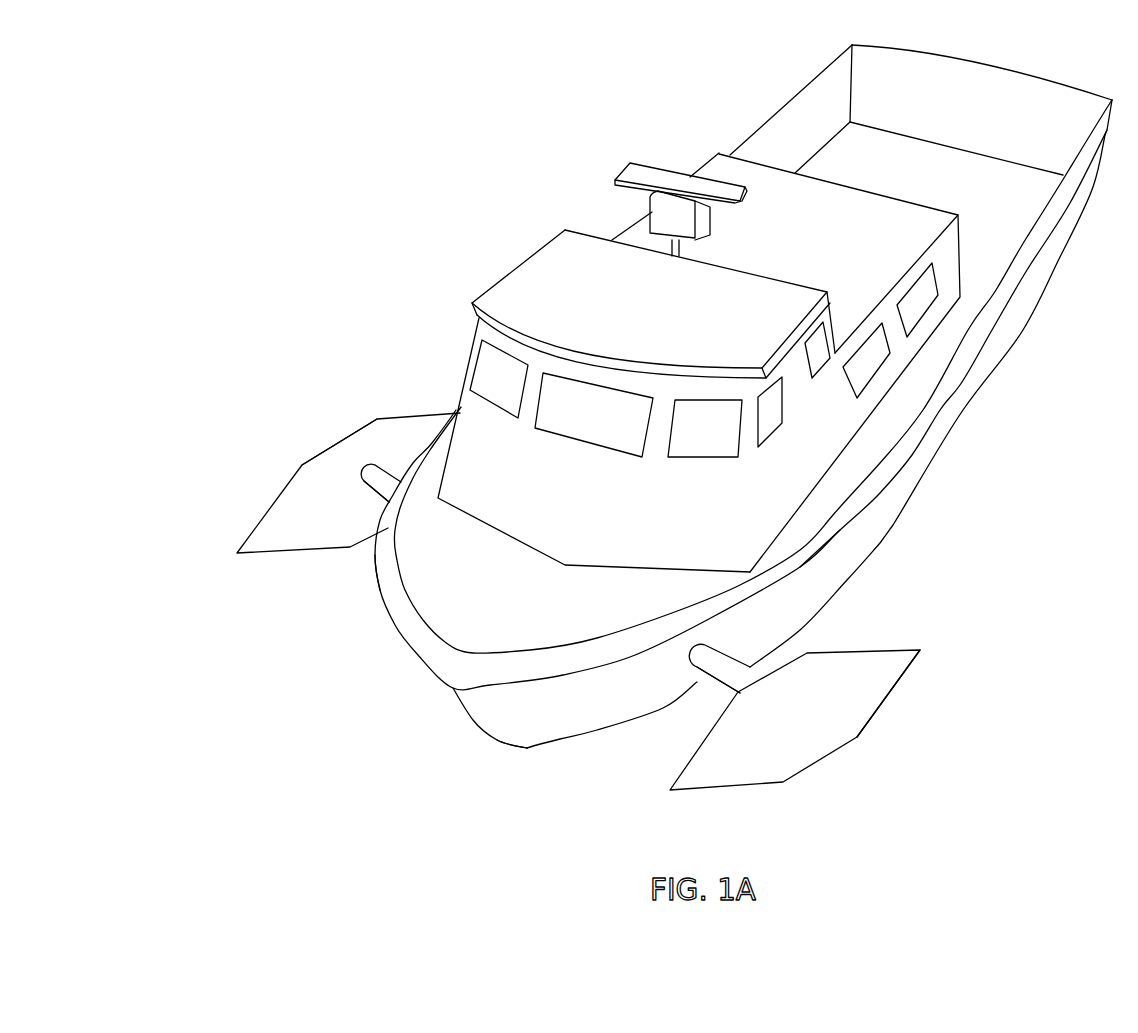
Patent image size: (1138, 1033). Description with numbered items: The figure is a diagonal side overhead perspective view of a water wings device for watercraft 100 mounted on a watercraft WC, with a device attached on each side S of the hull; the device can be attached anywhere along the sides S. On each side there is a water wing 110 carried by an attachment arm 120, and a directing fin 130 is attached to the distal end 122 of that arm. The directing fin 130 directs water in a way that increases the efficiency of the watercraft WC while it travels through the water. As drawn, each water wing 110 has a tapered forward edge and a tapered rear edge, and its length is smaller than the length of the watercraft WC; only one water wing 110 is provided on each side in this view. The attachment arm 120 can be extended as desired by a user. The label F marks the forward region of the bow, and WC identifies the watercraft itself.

The water wings device for watercraft 100 is at (346, 421).
The water wing 110 is at (282, 472).
The attachment arm 120 is at (387, 472).
The distal end 122 is at (366, 485).
The directing fin 130 is at (327, 446).
The side S is at (378, 571).
The forefoot / bow bottom F is at (527, 748).
The watercraft WC is at (670, 331).